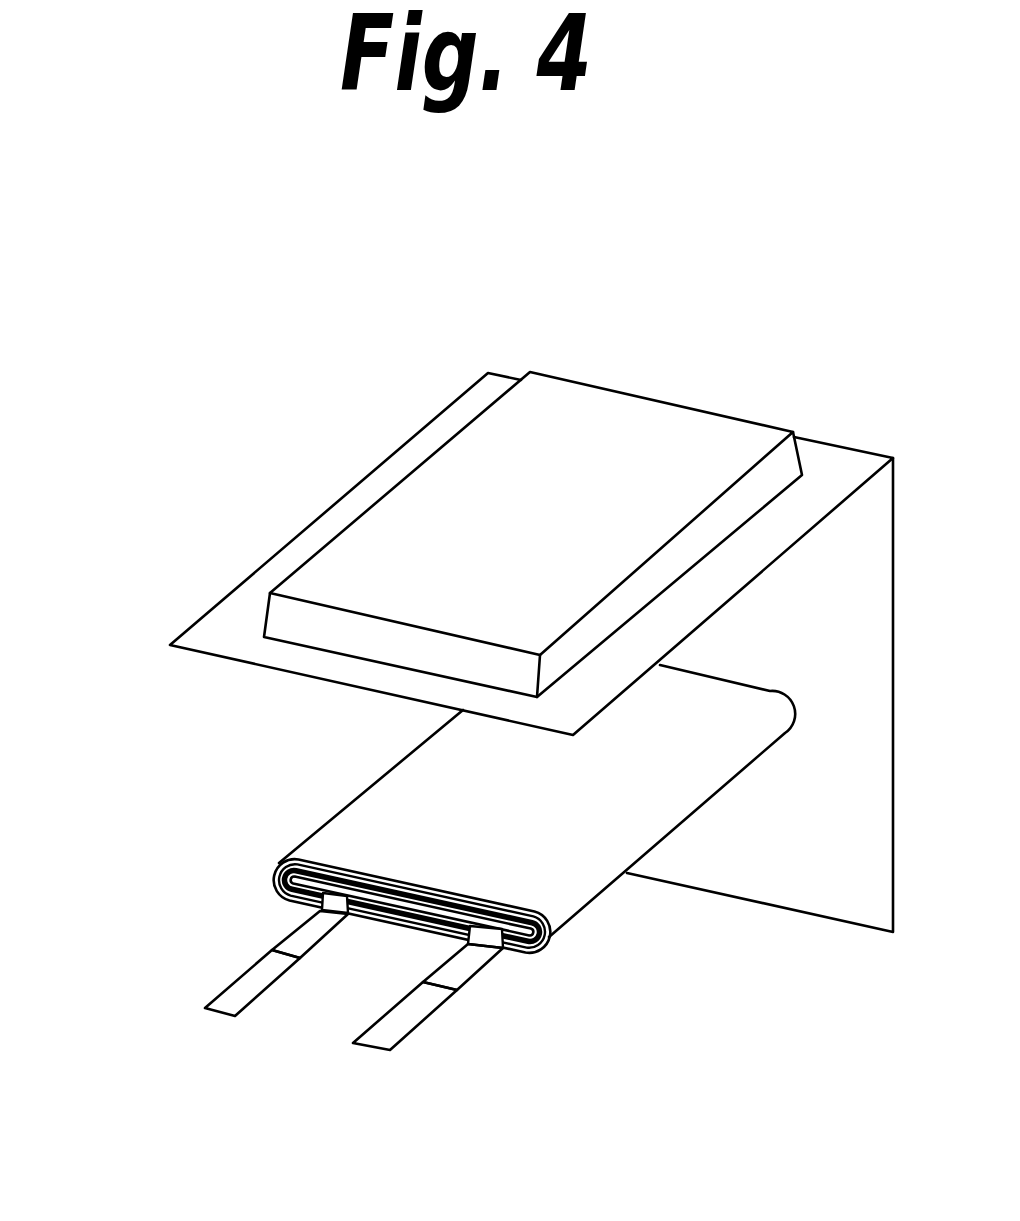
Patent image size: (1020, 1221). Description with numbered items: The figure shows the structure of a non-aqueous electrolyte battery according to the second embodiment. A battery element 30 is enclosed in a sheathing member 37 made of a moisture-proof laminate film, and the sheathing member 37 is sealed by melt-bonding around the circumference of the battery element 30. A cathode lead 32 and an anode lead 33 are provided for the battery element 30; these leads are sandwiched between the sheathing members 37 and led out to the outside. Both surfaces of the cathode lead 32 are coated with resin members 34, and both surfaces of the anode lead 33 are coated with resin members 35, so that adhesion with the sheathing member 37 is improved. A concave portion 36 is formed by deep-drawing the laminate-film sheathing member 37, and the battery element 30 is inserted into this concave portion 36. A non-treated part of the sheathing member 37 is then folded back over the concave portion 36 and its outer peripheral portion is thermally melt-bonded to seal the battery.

The battery element 30 is at (308, 837).
The cathode lead 32 is at (403, 1042).
The anode lead 33 is at (210, 997).
The resin member 34 is at (487, 972).
The resin member 35 is at (292, 926).
The concave portion 36 is at (481, 438).
The sheathing member 37 is at (313, 522).